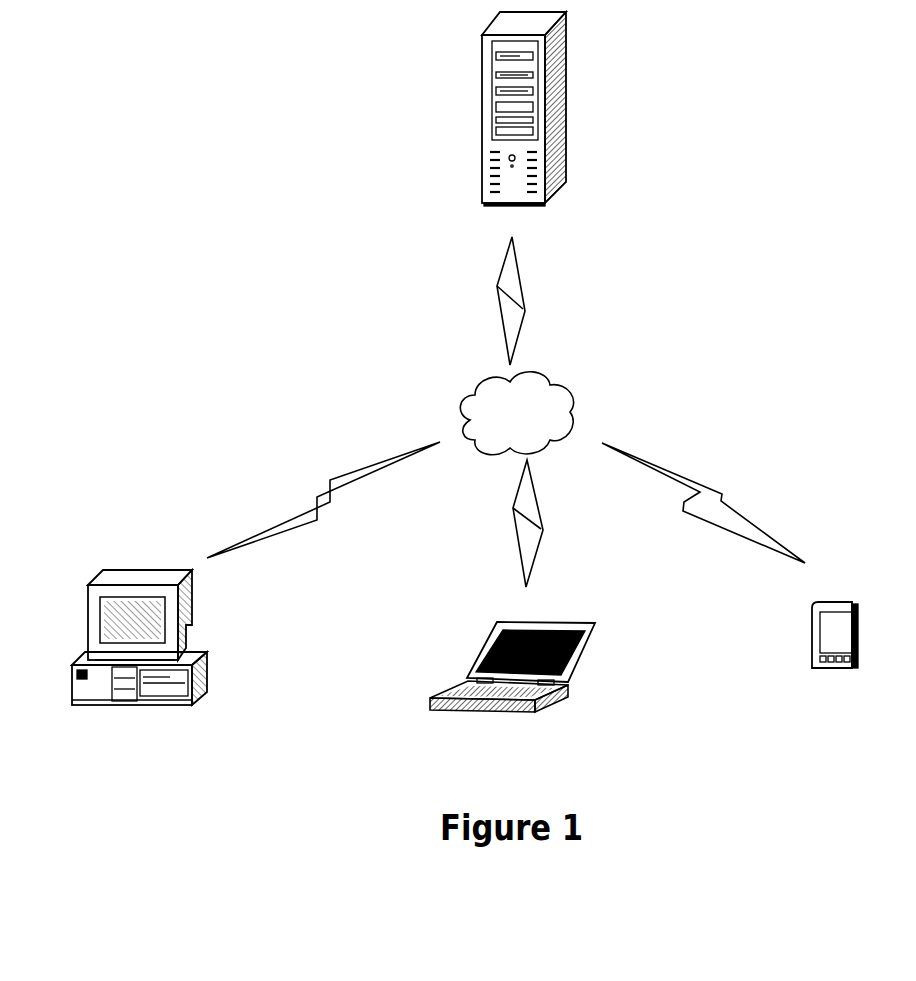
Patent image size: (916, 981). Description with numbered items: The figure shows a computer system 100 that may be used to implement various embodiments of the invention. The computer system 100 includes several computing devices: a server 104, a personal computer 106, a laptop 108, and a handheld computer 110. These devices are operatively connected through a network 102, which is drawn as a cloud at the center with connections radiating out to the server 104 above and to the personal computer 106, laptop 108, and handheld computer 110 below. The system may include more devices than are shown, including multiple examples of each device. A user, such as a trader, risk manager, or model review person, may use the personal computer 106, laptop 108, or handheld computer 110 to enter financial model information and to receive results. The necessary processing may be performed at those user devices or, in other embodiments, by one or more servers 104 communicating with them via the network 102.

The computer system 100 is at (222, 145).
The network 102 is at (568, 383).
The server 104 is at (580, 42).
The personal computer 106 is at (205, 615).
The laptop 108 is at (600, 618).
The handheld computer 110 is at (858, 593).